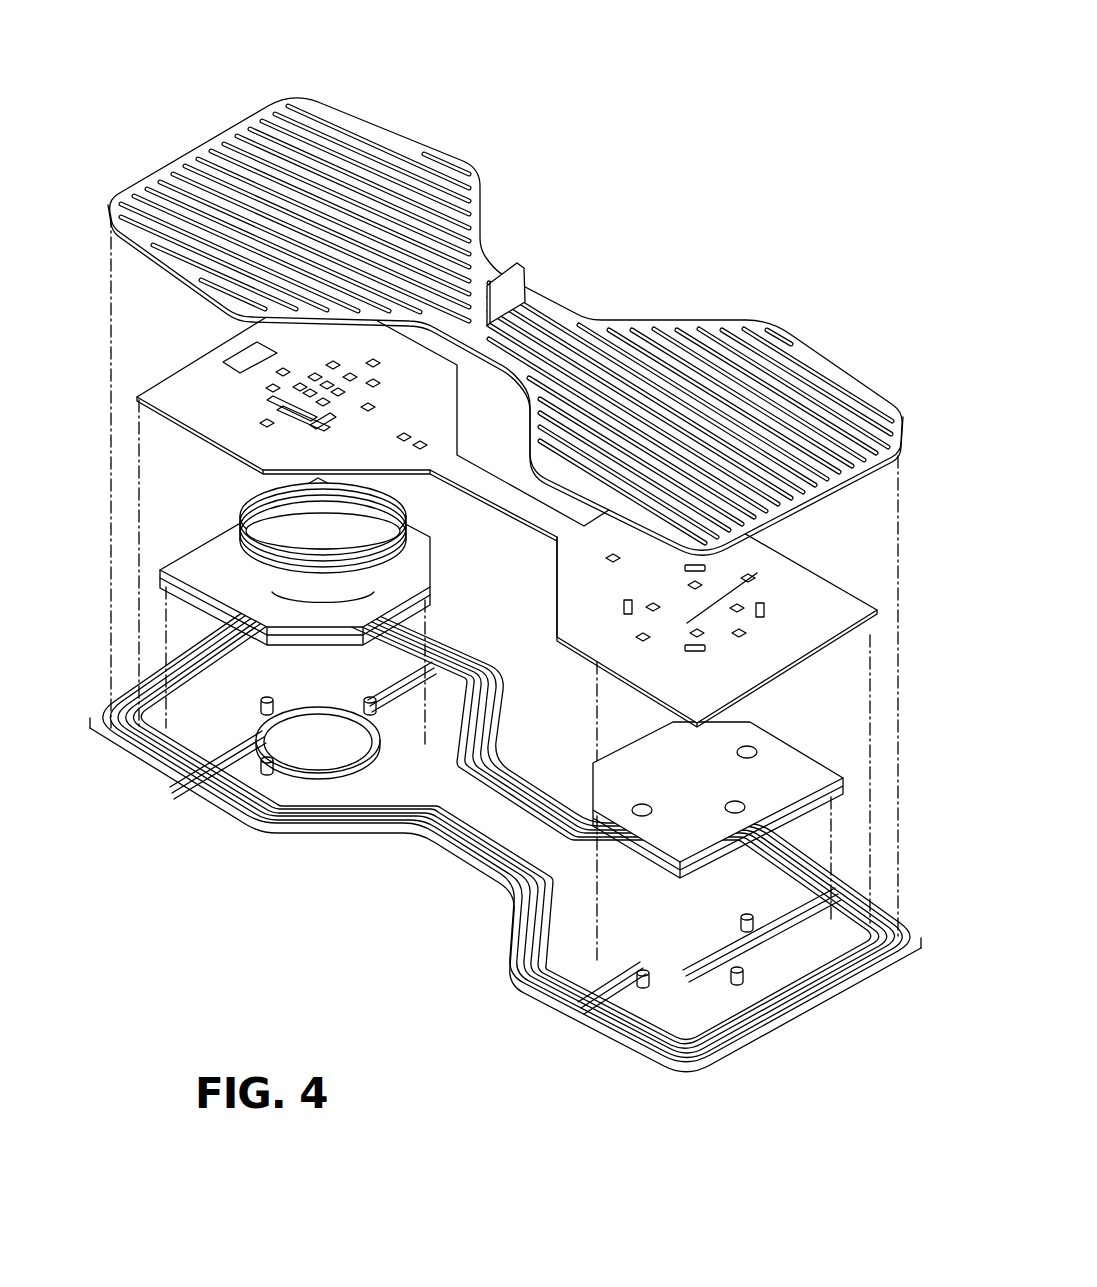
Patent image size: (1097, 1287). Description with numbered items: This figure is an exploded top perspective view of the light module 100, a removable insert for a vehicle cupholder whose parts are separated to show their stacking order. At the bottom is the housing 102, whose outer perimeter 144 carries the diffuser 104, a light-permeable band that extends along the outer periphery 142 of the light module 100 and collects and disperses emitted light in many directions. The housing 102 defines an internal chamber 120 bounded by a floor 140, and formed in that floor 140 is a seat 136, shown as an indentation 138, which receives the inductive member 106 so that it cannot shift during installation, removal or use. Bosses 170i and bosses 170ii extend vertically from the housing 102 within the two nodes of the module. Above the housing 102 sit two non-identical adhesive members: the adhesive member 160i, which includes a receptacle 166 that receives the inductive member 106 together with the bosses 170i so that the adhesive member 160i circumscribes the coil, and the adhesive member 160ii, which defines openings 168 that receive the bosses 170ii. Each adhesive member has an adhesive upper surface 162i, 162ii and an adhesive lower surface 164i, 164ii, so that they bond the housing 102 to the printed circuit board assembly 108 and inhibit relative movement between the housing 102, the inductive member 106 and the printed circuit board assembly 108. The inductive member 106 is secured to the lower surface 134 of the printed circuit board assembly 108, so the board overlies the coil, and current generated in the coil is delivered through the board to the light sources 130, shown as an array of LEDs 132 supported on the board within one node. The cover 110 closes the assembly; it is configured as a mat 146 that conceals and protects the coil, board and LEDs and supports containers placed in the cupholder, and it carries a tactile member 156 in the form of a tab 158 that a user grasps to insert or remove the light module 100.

The light module 100 is at (627, 70).
The housing 102 is at (695, 1094).
The diffuser 104 is at (643, 1057).
The inductive member 106 is at (232, 503).
The printed circuit board assembly 108 is at (846, 576).
The cover 110 is at (436, 104).
The internal chamber 120 is at (386, 792).
The light sources 130 is at (766, 571).
The LEDs 132 is at (622, 607).
The lower surface of the PCBA 134 is at (200, 434).
The seat 136 is at (353, 778).
The indentation 138 is at (323, 762).
The floor 140 is at (172, 765).
The outer periphery 142 is at (500, 988).
The outer perimeter 144 is at (558, 1018).
The mat 146 is at (478, 172).
The tactile member 156 is at (534, 250).
The tab 158 is at (526, 289).
The first adhesive member 160i is at (162, 555).
The second adhesive member 160ii is at (820, 742).
The adhesive upper surface of the first adhesive member 162i is at (187, 573).
The adhesive upper surface of the second adhesive member 162ii is at (830, 785).
The adhesive lower surface of the first adhesive member 164i is at (197, 590).
The adhesive lower surface of the second adhesive member 164ii is at (812, 808).
The receptacle 166 is at (203, 617).
The openings 168 is at (733, 814).
The first bosses 170i is at (270, 752).
The second bosses 170ii is at (652, 978).